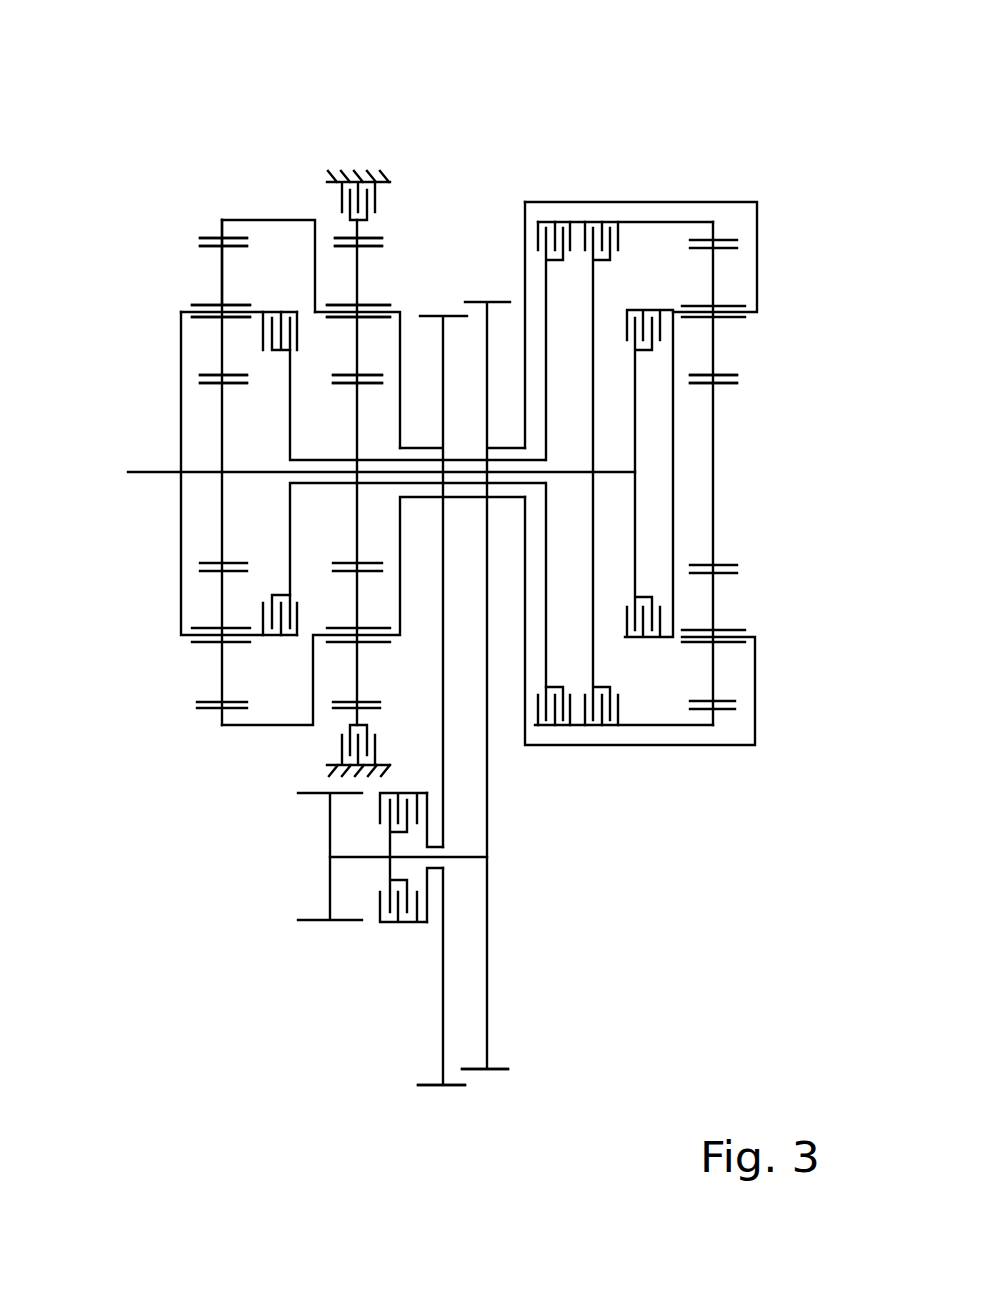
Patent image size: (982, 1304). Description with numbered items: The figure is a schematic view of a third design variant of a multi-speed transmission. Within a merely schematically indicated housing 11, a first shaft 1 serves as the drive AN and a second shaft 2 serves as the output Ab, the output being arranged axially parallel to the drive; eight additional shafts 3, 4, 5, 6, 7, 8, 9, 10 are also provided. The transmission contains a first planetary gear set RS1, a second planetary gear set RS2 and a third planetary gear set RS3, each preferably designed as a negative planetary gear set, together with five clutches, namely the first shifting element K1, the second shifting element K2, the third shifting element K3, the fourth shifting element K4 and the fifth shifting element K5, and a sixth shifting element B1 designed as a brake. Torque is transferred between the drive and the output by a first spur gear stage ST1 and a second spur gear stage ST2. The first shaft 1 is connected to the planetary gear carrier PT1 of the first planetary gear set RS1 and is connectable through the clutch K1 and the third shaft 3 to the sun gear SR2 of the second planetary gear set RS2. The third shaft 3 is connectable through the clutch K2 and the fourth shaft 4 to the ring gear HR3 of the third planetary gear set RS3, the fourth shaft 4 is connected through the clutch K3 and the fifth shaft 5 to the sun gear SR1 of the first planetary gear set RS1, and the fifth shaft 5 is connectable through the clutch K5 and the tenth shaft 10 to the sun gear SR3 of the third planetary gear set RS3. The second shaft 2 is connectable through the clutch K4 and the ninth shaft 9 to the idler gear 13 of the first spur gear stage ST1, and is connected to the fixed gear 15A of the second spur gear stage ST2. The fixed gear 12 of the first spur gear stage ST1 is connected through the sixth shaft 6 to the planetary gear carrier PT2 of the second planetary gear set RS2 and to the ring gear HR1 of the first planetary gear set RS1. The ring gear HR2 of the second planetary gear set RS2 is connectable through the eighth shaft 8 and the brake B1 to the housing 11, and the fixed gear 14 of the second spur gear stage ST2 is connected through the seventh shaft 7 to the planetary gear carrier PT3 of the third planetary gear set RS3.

The first shaft 1 is at (175, 473).
The second shaft 2 is at (330, 862).
The third shaft 3 is at (287, 435).
The fourth shaft 4 is at (697, 220).
The fifth shaft 5 is at (515, 452).
The sixth shaft 6 is at (220, 215).
The seventh shaft 7 is at (548, 495).
The eighth shaft 8 is at (313, 217).
The ninth shaft 9 is at (436, 872).
The tenth shaft 10 is at (680, 408).
The housing 11 is at (320, 768).
The fixed gear 12 is at (440, 633).
The idler gear 13 is at (427, 1090).
The fixed gear 14 is at (485, 647).
The fixed gear 15A is at (475, 1075).
The drive AN is at (130, 472).
The output Ab is at (330, 897).
The sixth shifting element B1 is at (360, 232).
The first shifting element K1 is at (263, 298).
The second shifting element K2 is at (550, 208).
The third shifting element K3 is at (600, 208).
The fourth shifting element K4 is at (377, 934).
The fifth shifting element K5 is at (647, 296).
The first planetary gear set RS1 is at (222, 181).
The second planetary gear set RS2 is at (358, 158).
The third planetary gear set RS3 is at (713, 188).
The ring gear HR1 is at (212, 222).
The ring gear HR2 is at (404, 310).
The ring gear HR3 is at (715, 226).
The planetary gear carrier PT1 is at (182, 303).
The planetary gear carrier PT2 is at (342, 320).
The planetary gear carrier PT3 is at (733, 320).
The sun gear SR1 is at (215, 402).
The sun gear SR2 is at (365, 418).
The sun gear SR3 is at (718, 427).
The first spur gear stage ST1 is at (443, 306).
The second spur gear stage ST2 is at (487, 295).